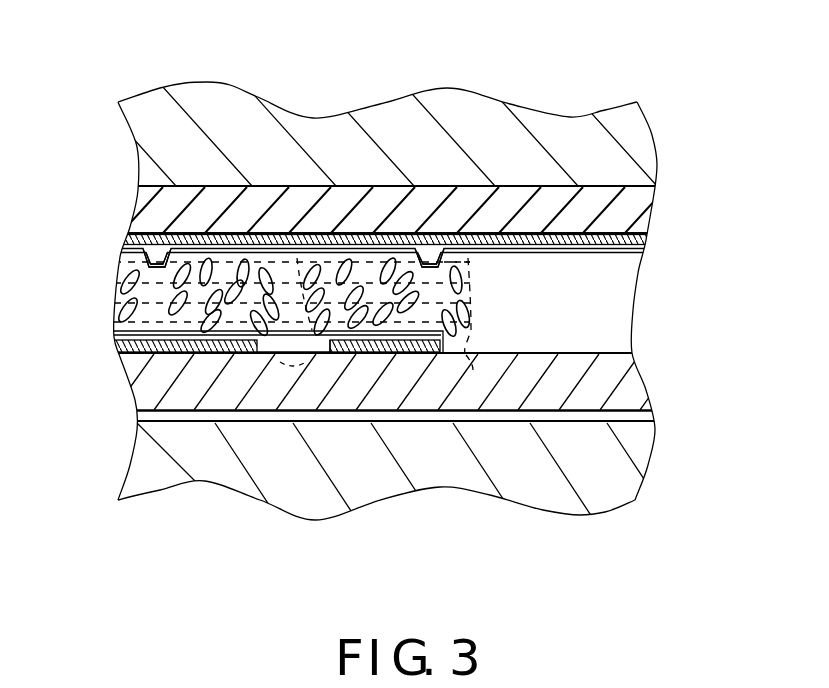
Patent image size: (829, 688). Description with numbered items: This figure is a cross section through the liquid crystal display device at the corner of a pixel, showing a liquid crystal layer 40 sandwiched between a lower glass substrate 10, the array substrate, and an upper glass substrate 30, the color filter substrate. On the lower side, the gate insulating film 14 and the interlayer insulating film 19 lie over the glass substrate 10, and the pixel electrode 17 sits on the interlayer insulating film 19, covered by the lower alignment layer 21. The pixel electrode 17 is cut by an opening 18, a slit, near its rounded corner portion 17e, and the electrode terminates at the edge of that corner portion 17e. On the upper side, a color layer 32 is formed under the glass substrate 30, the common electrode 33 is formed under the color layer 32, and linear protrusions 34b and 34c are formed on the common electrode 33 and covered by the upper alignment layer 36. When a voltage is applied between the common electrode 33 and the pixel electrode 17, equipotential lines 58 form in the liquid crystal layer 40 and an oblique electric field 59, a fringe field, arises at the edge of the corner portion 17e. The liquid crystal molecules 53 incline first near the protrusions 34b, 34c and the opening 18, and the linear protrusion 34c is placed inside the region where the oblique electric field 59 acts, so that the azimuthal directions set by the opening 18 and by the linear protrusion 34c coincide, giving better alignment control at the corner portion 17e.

The glass substrate 10 is at (208, 474).
The gate insulating film 14 is at (637, 421).
The pixel electrode 17 is at (118, 352).
The corner portion 17e is at (385, 357).
The opening 18 is at (275, 349).
The interlayer insulating film 19 is at (140, 400).
The lower alignment layer 21 is at (116, 333).
The glass substrate 30 is at (205, 115).
The color layer 32 is at (382, 207).
The common electrode 33 is at (563, 246).
The linear protrusion 34b is at (146, 249).
The linear protrusion 34c is at (433, 250).
The upper alignment layer 36 is at (122, 250).
The liquid crystal layer 40 is at (625, 283).
The liquid crystal molecules 53 is at (474, 318).
The equipotential lines 58 is at (221, 267).
The oblique electric field 59 is at (470, 265).